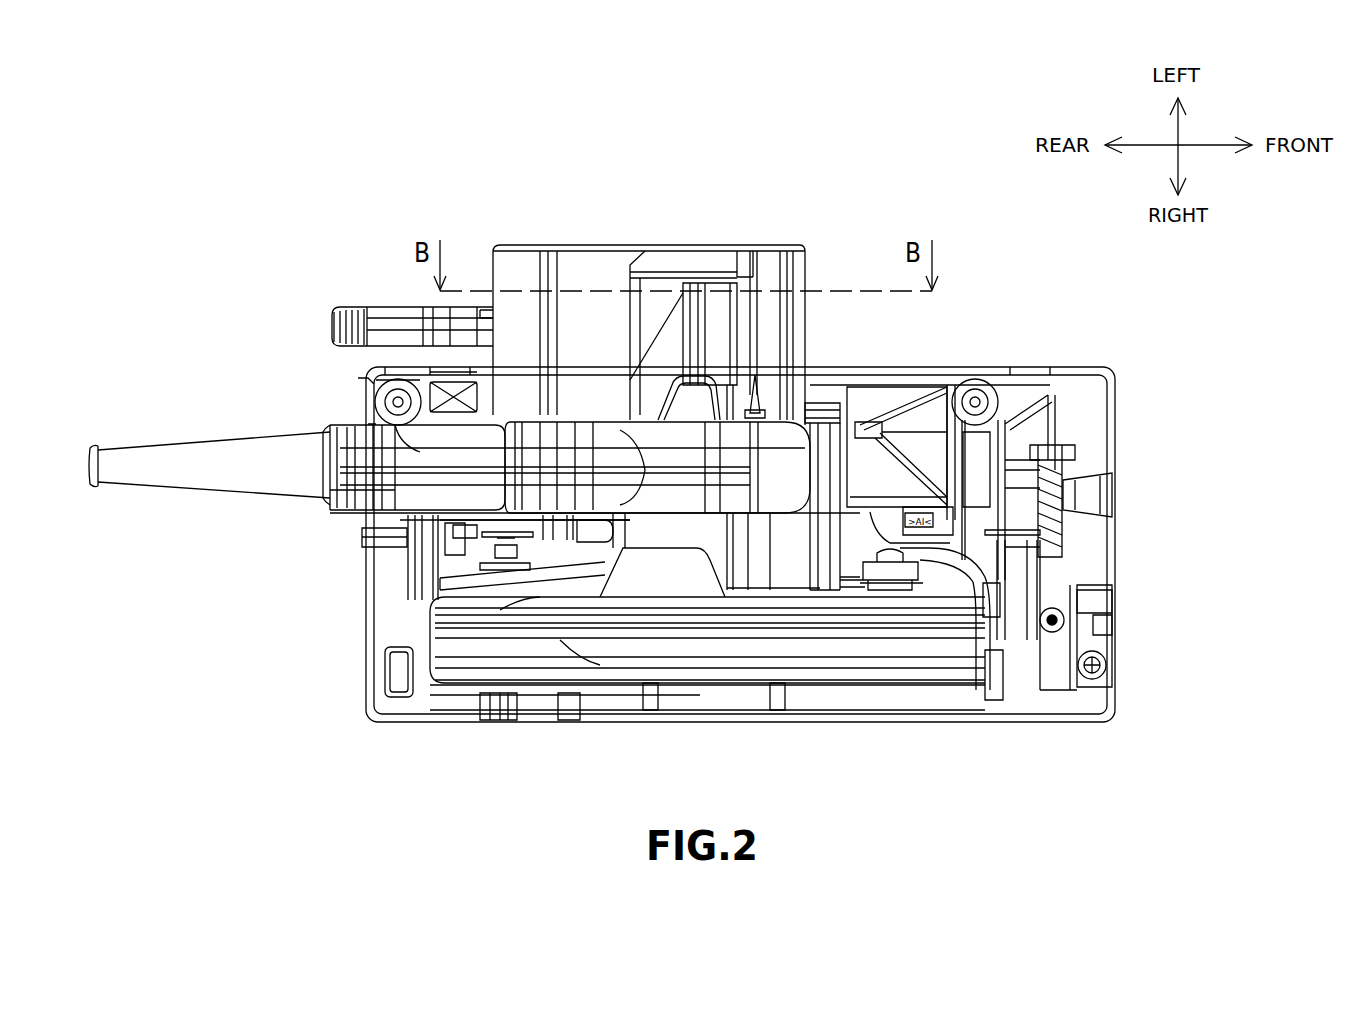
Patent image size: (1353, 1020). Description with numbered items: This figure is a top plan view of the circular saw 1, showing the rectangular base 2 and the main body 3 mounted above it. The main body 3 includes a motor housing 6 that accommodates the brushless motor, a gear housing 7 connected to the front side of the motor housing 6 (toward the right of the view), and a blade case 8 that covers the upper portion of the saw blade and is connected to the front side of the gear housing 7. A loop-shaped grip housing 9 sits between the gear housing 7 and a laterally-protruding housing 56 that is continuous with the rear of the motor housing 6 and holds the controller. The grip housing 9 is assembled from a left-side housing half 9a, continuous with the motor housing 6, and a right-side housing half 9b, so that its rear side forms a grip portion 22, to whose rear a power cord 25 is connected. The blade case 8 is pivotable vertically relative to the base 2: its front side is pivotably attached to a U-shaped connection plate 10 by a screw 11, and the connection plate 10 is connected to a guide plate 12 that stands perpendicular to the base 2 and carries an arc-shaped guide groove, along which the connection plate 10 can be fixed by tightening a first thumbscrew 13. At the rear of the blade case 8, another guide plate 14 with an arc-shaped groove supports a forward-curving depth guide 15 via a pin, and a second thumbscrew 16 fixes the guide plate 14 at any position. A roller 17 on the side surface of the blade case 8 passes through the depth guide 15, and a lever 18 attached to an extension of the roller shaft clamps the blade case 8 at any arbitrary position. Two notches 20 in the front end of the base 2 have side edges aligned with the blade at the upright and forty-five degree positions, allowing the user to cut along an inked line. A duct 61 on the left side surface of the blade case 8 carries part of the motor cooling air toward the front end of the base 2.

The circular saw 1 is at (1015, 305).
The base 2 is at (1100, 404).
The main body 3 is at (750, 289).
The motor housing 6 is at (800, 315).
The gear housing 7 is at (830, 470).
The blade case 8 is at (732, 648).
The grip housing 9 is at (562, 461).
The left-side housing half 9a is at (405, 437).
The right-side housing half 9b is at (398, 493).
The connection plate 10 is at (1025, 550).
The screw 11 is at (1012, 653).
The guide plate 12 is at (1050, 526).
The first thumbscrew 13 is at (1095, 480).
The guide plate 14 is at (430, 568).
The depth guide 15 is at (445, 565).
The second thumbscrew 16 is at (390, 548).
The roller 17 is at (520, 585).
The lever 18 is at (385, 315).
The notch 20 is at (1105, 600).
The grip portion 22 is at (620, 432).
The power cord 25 is at (204, 462).
The laterally-protruding housing 56 is at (522, 262).
The duct 61 is at (937, 567).